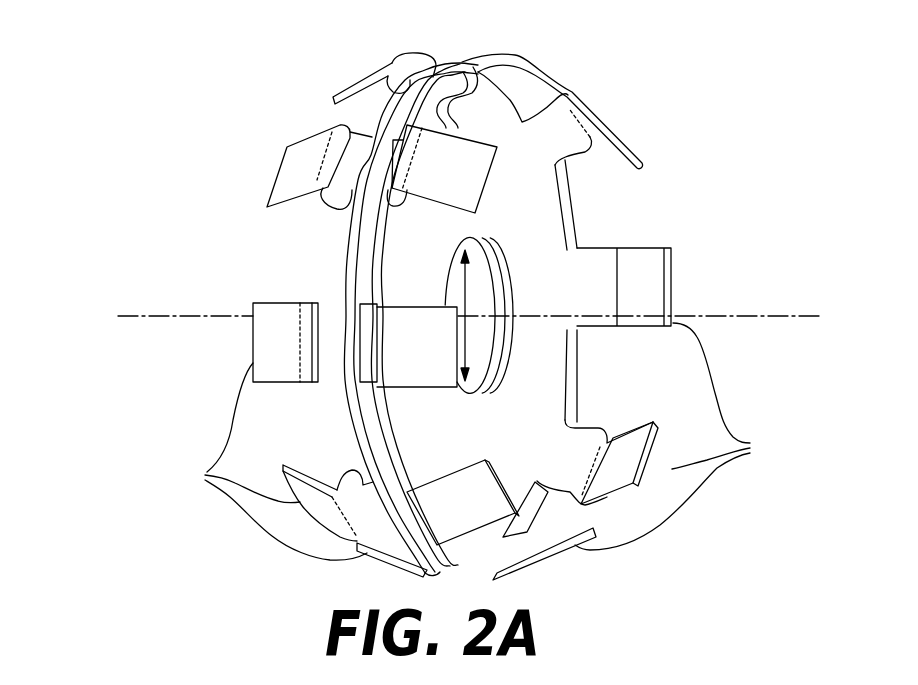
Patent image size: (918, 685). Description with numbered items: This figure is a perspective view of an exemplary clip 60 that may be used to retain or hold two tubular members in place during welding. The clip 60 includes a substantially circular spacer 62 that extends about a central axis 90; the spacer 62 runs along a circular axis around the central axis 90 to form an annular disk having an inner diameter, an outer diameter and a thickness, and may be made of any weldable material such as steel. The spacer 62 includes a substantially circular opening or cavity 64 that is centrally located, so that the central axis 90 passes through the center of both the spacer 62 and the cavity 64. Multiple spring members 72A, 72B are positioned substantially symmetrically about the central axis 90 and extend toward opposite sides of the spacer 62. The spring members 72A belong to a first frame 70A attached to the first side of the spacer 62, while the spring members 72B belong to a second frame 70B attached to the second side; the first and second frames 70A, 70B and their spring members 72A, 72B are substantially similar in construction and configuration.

The clip 60 is at (119, 132).
The spacer 62 is at (443, 65).
The cavity 64 is at (473, 285).
The first frame 70A is at (347, 256).
The second frame 70B is at (540, 227).
The spring members 72A is at (267, 461).
The spring members 72B is at (680, 436).
The central axis 90 is at (803, 316).